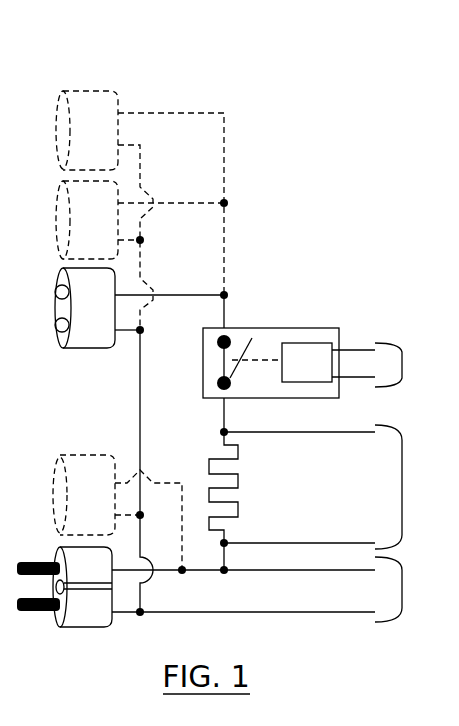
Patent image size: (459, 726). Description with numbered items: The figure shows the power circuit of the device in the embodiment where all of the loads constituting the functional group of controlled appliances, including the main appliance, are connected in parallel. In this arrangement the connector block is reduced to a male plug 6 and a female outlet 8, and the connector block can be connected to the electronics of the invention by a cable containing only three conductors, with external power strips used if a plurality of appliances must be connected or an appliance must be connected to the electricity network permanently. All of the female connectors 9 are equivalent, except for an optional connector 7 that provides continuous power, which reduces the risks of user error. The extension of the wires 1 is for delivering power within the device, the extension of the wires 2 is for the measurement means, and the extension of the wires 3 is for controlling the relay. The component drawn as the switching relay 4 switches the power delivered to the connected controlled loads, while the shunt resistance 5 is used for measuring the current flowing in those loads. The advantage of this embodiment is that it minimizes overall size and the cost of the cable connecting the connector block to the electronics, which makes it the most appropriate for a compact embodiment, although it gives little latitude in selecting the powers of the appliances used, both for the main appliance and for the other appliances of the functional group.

The wires 1 is at (402, 602).
The wires 2 is at (402, 488).
The wires 3 is at (402, 360).
The switching relay 4 is at (290, 328).
The shunt resistance 5 is at (238, 474).
The male plug 6 is at (96, 627).
The optional connector 7 is at (82, 455).
The female outlet 8 is at (95, 348).
The female connectors 9 is at (58, 197).